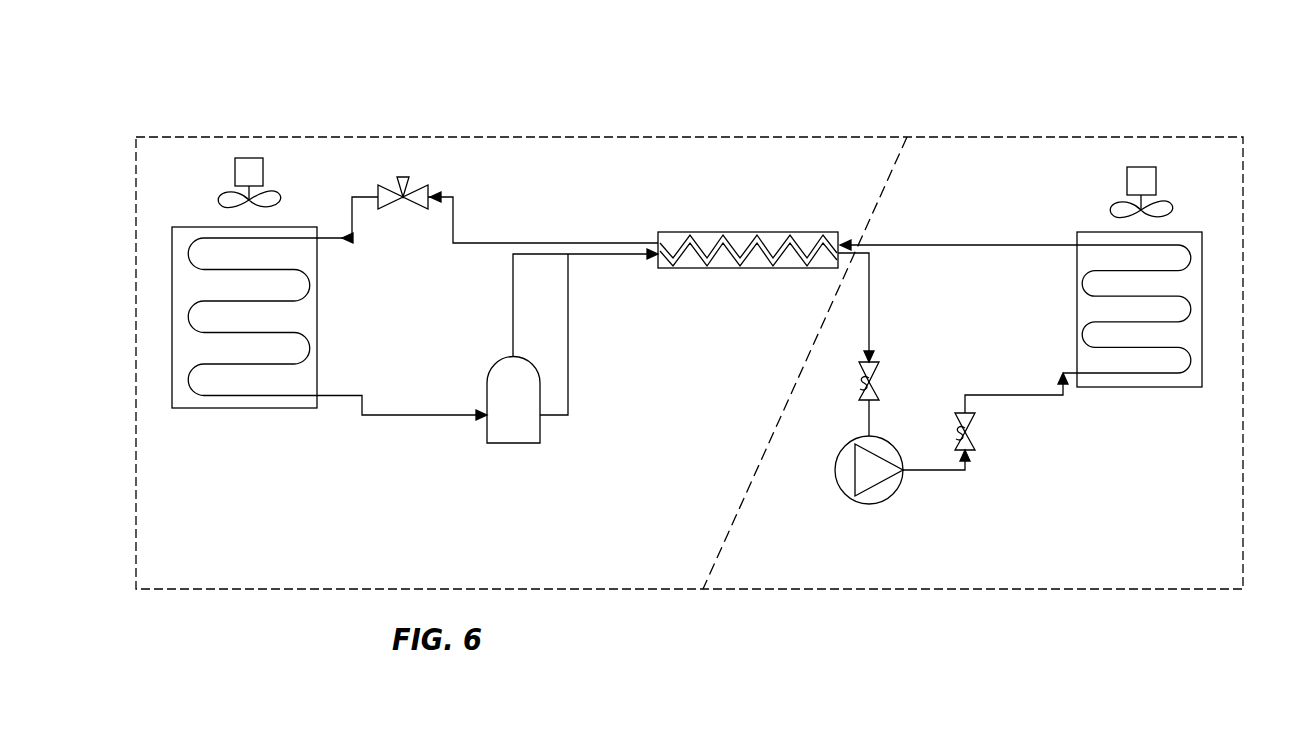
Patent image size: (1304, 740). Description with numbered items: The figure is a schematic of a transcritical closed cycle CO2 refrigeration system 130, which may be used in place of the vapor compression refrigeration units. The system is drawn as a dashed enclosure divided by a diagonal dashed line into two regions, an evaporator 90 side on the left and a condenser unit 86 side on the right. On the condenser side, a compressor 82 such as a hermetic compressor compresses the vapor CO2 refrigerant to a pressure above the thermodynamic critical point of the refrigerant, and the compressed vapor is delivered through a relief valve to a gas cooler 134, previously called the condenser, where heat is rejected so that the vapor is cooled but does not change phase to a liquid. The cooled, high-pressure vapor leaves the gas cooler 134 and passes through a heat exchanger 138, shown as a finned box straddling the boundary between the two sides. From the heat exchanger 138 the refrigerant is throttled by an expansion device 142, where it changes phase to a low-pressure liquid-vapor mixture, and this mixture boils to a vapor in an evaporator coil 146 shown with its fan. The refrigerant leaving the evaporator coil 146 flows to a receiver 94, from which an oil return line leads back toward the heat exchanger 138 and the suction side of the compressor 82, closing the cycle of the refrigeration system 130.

The transcritical closed cycle CO2 refrigeration system 130 is at (838, 69).
The evaporator 90 is at (133, 507).
The condenser unit 86 is at (1243, 522).
The evaporator coil 146 is at (237, 393).
The expansion device 142 is at (393, 207).
The receiver 94 is at (515, 435).
The heat exchanger 138 is at (745, 230).
The compressor 82 is at (892, 497).
The gas cooler 134 is at (1137, 388).